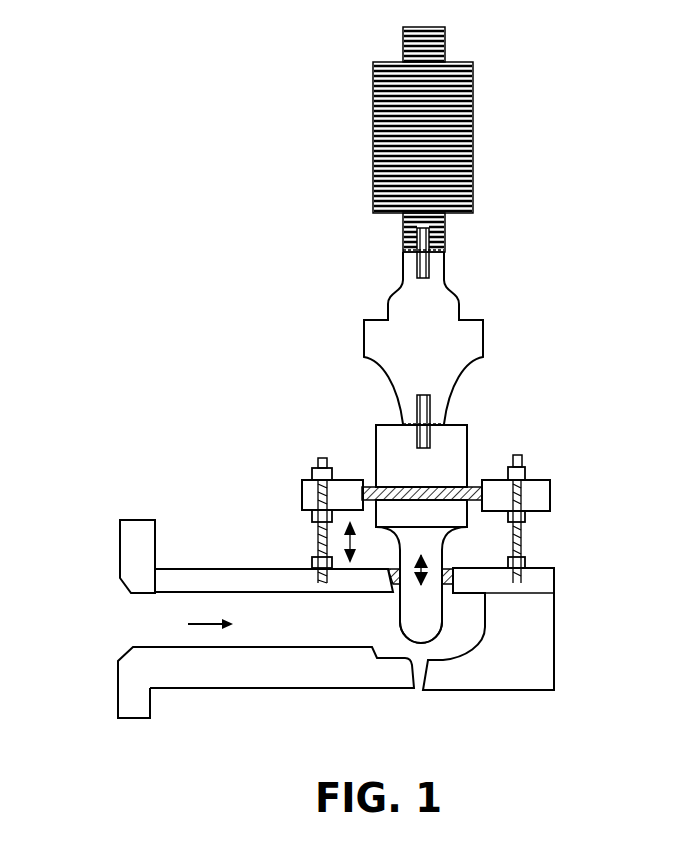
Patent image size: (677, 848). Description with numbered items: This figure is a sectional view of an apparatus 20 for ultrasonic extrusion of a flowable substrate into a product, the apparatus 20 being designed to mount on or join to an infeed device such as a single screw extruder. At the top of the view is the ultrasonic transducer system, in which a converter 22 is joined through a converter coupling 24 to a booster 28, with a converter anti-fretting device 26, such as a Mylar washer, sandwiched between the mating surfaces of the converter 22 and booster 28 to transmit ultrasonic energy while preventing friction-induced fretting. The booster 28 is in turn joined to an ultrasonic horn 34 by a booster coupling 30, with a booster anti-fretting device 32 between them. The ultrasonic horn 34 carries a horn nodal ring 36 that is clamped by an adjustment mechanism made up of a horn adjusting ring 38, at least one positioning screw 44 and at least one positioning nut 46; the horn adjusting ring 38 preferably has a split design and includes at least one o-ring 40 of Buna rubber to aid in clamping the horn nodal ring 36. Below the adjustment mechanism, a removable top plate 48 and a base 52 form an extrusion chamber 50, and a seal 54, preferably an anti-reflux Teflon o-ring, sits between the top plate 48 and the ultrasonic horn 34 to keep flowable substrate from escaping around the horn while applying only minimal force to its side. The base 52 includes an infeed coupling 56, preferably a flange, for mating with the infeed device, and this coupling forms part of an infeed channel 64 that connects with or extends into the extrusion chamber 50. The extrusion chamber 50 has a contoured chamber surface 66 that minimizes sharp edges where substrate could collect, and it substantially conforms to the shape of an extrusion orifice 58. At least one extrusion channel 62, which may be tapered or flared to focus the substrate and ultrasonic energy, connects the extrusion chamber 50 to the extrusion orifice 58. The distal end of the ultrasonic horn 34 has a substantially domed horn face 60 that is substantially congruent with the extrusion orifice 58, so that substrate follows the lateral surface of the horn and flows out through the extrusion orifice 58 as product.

The apparatus 20 is at (137, 202).
The converter 22 is at (473, 82).
The converter coupling 24 is at (443, 250).
The converter anti-fretting device 26 is at (405, 252).
The booster 28 is at (400, 308).
The booster coupling 30 is at (432, 405).
The booster anti-fretting device 32 is at (401, 413).
The ultrasonic horn 34 is at (457, 440).
The horn nodal ring 36 is at (363, 480).
The horn adjusting ring 38 is at (302, 495).
The o-ring 40 is at (366, 486).
The positioning screw 44 is at (532, 480).
The positioning nut 46 is at (525, 468).
The top plate 48 is at (170, 583).
The extrusion chamber 50 is at (321, 638).
The base 52 is at (553, 658).
The seal 54 is at (455, 581).
The infeed coupling 56 is at (130, 563).
The extrusion orifice 58 is at (418, 675).
The horn face 60 is at (443, 637).
The extrusion channel 62 is at (428, 672).
The infeed channel 64 is at (162, 626).
The chamber surface 66 is at (375, 648).